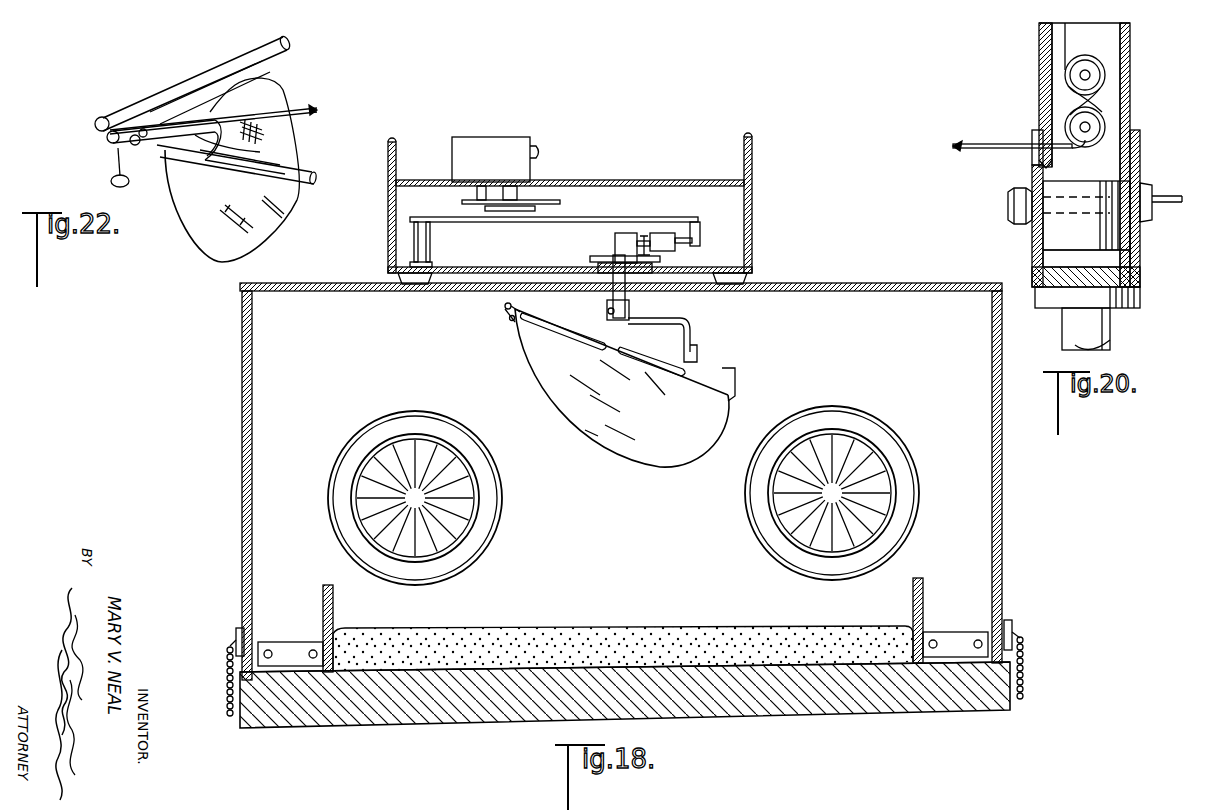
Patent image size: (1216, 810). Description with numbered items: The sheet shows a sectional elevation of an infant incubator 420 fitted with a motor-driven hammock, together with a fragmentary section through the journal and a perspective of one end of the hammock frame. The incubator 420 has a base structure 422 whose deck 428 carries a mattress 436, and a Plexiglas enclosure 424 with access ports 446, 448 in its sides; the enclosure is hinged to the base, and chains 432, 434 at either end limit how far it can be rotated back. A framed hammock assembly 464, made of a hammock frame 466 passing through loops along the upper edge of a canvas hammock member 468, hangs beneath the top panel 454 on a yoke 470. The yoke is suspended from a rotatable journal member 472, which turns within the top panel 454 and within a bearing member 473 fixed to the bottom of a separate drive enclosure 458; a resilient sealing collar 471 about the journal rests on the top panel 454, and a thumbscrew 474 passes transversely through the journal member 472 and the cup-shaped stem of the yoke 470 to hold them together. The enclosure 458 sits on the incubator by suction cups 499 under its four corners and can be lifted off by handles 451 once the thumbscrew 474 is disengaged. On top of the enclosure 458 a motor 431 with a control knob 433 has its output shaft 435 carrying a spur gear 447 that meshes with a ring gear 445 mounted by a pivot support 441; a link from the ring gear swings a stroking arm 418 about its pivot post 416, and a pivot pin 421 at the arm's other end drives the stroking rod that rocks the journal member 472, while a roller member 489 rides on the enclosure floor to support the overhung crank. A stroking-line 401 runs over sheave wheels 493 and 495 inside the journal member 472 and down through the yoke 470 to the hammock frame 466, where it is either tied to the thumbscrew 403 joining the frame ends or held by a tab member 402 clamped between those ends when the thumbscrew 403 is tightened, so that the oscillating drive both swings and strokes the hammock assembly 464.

In FIG. 18, the stroking-line 401 is at (528, 345).
In FIG. 20, the stroking-line 401 is at (958, 150).
In FIG. 22, the stroking-line 401 is at (318, 108).
In FIG. 18, the tab member 402 is at (510, 321).
In FIG. 22, the tab member 402 is at (112, 163).
In FIG. 22, the thumbscrew 403 is at (150, 120).
In FIG. 18, the stroking arm pivot post 416 is at (424, 250).
In FIG. 18, the stroking arm 418 is at (470, 222).
In FIG. 18, the incubator 420 is at (1005, 472).
In FIG. 18, the pivot pin 421 is at (693, 222).
In FIG. 18, the base structure 422 is at (425, 728).
In FIG. 18, the enclosure 424 is at (1003, 502).
In FIG. 18, the deck 428 is at (355, 712).
In FIG. 18, the motor 431 is at (488, 136).
In FIG. 18, the chain 432 is at (228, 657).
In FIG. 18, the motor control knob 433 is at (540, 150).
In FIG. 18, the chain 434 is at (1030, 650).
In FIG. 18, the motor output shaft 435 is at (476, 180).
In FIG. 18, the mattress 436 is at (520, 635).
In FIG. 18, the pivot support 441 is at (518, 197).
In FIG. 18, the ring gear 445 is at (562, 203).
In FIG. 18, the access port 446 is at (500, 525).
In FIG. 18, the spur gear 447 is at (468, 200).
In FIG. 18, the access port 448 is at (752, 520).
In FIG. 18, the handles 451 is at (752, 162).
In FIG. 18, the top panel 454 is at (885, 283).
In FIG. 18, the enclosure 458 is at (752, 215).
In FIG. 18, the framed hammock assembly 464 is at (530, 390).
In FIG. 18, the hammock frame 466 is at (732, 388).
In FIG. 22, the hammock frame 466 is at (310, 170).
In FIG. 18, the hammock member 468 is at (627, 448).
In FIG. 22, the hammock member 468 is at (206, 232).
In FIG. 18, the yoke 470 is at (694, 328).
In FIG. 20, the yoke 470 is at (1140, 256).
In FIG. 18, the sealing collar 471 is at (600, 271).
In FIG. 18, the journal member 472 is at (632, 298).
In FIG. 20, the journal member 472 is at (1130, 63).
In FIG. 18, the bearing member 473 is at (612, 268).
In FIG. 20, the thumbscrew 474 is at (1200, 176).
In FIG. 18, the roller member 489 is at (665, 258).
In FIG. 20, the sheave wheel 493 is at (1065, 73).
In FIG. 20, the sheave wheel 495 is at (1065, 118).
In FIG. 18, the suction cups 499 is at (400, 282).